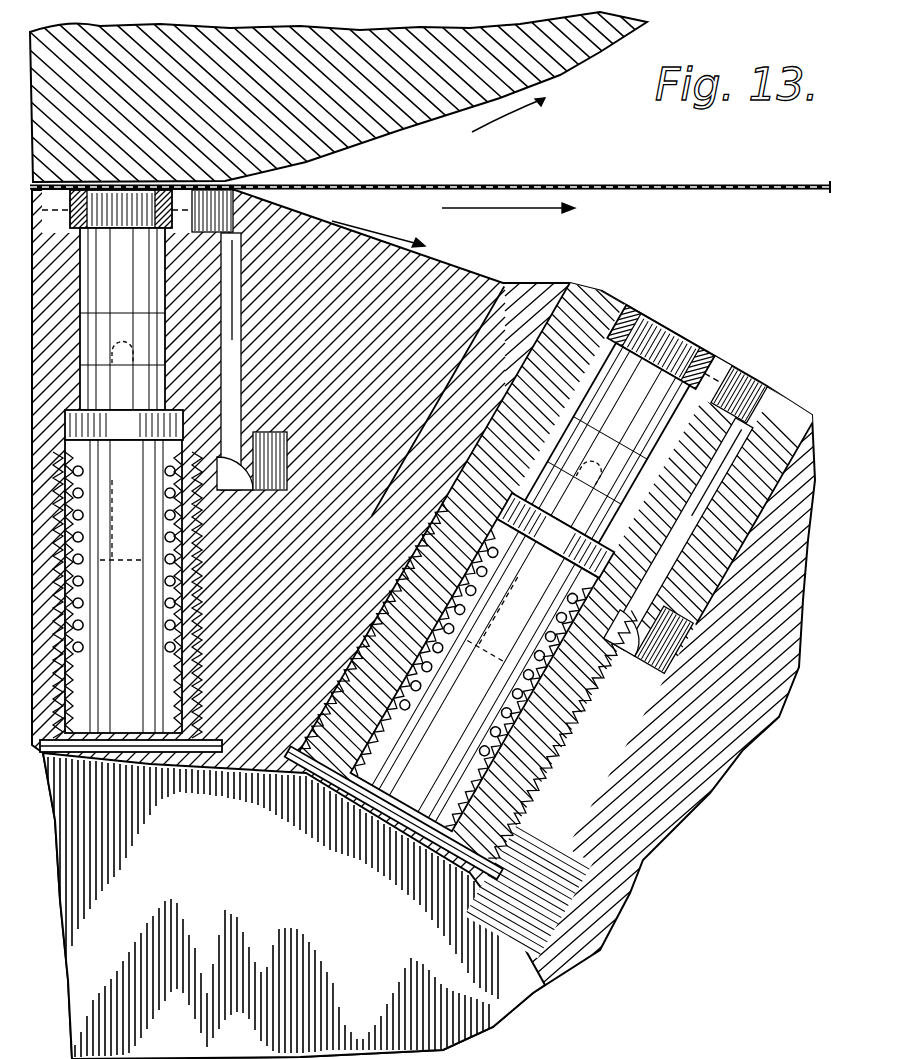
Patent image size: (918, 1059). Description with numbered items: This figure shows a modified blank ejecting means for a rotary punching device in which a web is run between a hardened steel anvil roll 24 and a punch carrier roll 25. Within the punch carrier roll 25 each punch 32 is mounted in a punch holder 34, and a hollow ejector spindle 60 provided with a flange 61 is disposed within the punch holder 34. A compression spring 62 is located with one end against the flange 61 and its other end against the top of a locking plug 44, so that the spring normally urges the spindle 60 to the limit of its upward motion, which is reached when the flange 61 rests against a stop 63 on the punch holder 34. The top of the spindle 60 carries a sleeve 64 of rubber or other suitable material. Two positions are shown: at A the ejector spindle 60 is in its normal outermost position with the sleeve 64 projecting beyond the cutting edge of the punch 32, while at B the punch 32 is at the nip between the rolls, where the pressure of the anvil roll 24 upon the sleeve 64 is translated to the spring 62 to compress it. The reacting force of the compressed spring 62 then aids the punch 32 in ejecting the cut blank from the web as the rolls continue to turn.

The anvil roll 24 is at (337, 139).
The punch carrier roll 25 is at (442, 285).
The punch 32 is at (262, 262).
The punch holder 34 is at (234, 347).
The locking plug 44 is at (196, 722).
The ejector spindle 60 is at (184, 512).
The flange 61 is at (185, 440).
The compression spring 62 is at (203, 608).
The stop 63 is at (185, 412).
The sleeve 64 is at (76, 188).
The position of the ejector spindle in its outermost position A is at (667, 327).
The position of the punch at the nip B is at (136, 186).